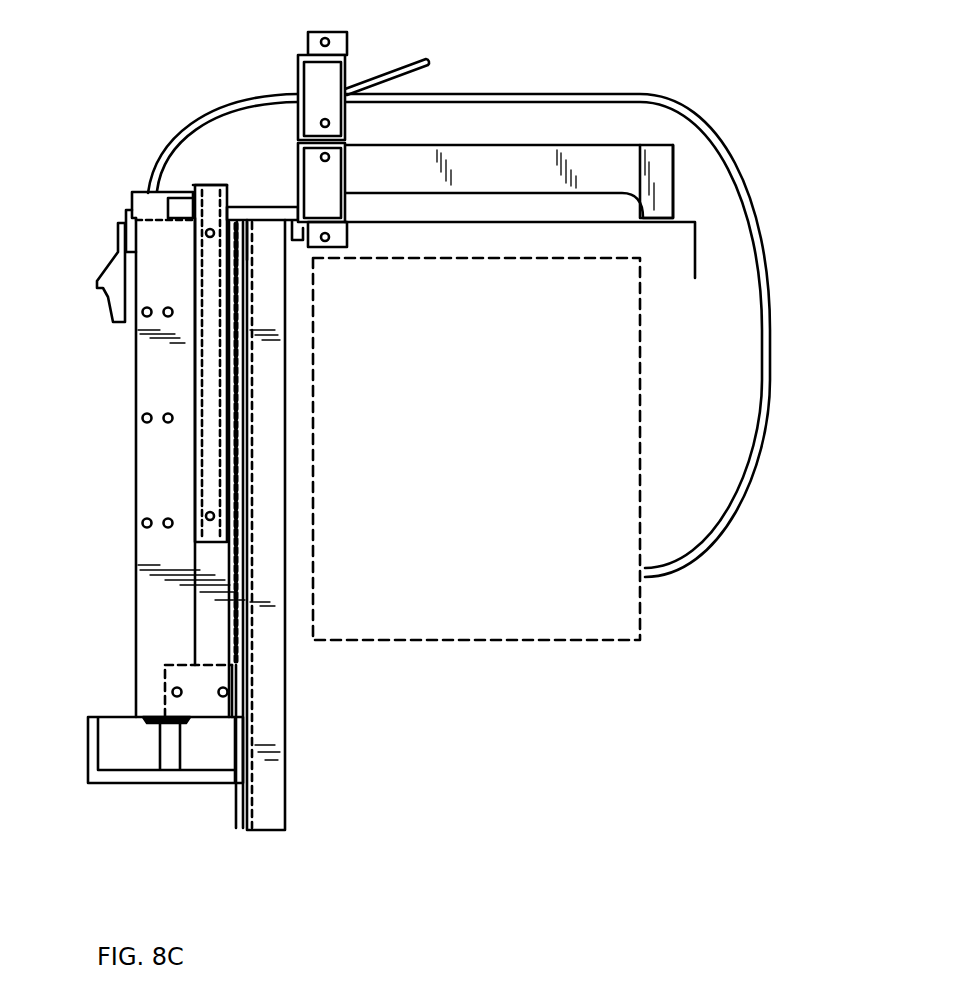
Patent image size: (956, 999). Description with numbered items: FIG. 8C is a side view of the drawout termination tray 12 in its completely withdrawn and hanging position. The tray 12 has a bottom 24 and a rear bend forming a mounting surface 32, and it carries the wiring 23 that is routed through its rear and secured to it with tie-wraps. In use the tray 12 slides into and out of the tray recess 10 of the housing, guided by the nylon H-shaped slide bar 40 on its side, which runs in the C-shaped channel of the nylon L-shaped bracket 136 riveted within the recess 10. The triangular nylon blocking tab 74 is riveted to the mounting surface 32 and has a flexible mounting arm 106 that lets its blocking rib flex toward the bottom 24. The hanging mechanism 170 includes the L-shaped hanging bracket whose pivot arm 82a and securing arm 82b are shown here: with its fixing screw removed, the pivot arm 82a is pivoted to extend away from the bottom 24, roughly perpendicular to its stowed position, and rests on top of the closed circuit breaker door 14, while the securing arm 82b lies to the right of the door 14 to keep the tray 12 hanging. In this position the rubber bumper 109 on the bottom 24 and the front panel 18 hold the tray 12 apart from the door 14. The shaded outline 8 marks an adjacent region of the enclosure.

The workpiece 8 is at (640, 400).
The tray recess 10 is at (497, 203).
The termination tray 12 is at (112, 562).
The circuit breaker door 14 is at (272, 537).
The front panel 18 is at (140, 783).
The wiring 23 is at (385, 63).
The bottom 24 is at (232, 630).
The mounting surface 32 is at (135, 242).
The slide bar 40 is at (212, 185).
The blocking tab 74 is at (100, 278).
The pivot arm 82a is at (282, 207).
The securing arm 82b is at (330, 243).
The flexible mounting arm 106 is at (118, 232).
The rubber bumper 109 is at (247, 260).
The L-shaped bracket 136 is at (677, 167).
The hanging mechanism 170 is at (230, 167).